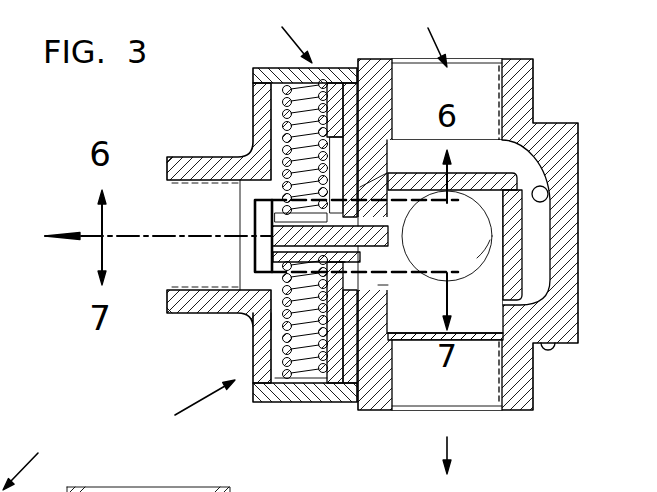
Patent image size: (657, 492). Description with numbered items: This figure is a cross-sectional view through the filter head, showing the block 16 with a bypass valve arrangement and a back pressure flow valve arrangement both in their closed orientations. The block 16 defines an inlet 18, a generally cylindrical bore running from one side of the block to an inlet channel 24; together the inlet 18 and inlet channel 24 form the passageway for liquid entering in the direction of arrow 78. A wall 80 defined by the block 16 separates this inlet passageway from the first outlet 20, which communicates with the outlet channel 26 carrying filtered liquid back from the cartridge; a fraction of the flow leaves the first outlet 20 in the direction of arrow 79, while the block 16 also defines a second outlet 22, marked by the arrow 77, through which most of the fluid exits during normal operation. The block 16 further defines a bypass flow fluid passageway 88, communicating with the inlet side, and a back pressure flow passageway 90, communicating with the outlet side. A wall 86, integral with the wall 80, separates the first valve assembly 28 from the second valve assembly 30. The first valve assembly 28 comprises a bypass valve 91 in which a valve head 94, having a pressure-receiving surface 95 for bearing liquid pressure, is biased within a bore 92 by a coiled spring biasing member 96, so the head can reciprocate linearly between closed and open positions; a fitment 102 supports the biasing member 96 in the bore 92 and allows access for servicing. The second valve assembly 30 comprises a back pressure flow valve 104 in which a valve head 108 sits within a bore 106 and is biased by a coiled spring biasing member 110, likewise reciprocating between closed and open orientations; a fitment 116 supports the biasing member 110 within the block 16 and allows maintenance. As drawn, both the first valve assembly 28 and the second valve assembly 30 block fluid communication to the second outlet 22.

The block 16 is at (558, 138).
The inlet 18 is at (497, 97).
The first outlet 20 is at (500, 380).
The second outlet 22 is at (205, 183).
The inlet channel 24 is at (552, 197).
The outlet channel 26 is at (477, 258).
The first valve assembly 28 is at (262, 236).
The second valve assembly 30 is at (190, 408).
The flow direction arrow 77 is at (62, 233).
The arrow 78 is at (423, 37).
The arrow 79 is at (444, 459).
The wall 80 is at (474, 172).
The wall 86 is at (342, 202).
The bypass flow fluid passageway 88 is at (360, 187).
The back pressure flow passageway 90 is at (378, 286).
The bypass valve 91 is at (157, 248).
The bore 92 is at (277, 152).
The valve head 94 is at (252, 200).
The pressure-receiving surface 95 is at (307, 224).
The biasing member 96 is at (274, 119).
The fitment 102 is at (264, 72).
The back pressure flow valve 104 is at (263, 411).
The bore 106 is at (276, 306).
The valve head 108 is at (345, 262).
The biasing member 110 is at (308, 380).
The fitment 116 is at (290, 402).